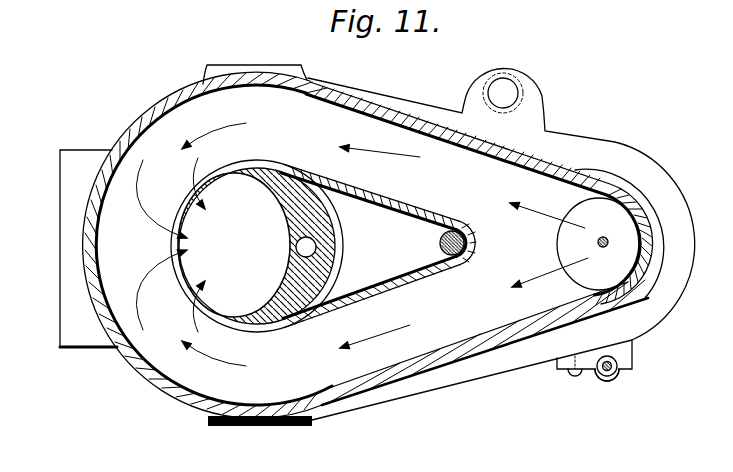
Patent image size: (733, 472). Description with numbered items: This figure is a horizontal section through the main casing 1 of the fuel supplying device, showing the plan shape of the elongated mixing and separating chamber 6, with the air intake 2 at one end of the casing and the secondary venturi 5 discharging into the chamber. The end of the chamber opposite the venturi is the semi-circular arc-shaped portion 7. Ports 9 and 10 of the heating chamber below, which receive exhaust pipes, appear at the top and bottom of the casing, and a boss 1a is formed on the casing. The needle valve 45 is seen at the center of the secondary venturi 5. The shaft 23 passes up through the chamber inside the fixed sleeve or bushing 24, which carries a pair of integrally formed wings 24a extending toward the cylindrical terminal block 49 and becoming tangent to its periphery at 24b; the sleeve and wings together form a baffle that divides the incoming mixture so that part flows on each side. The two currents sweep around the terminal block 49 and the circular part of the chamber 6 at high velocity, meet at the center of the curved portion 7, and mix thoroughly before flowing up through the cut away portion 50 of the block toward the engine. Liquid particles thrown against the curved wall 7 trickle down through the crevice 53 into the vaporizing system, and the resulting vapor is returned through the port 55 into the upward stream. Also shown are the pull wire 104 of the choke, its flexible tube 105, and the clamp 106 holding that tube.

The main casing 1 is at (388, 110).
The mounting boss 1a is at (533, 94).
The air intake 2 is at (58, 238).
The secondary venturi 5 is at (557, 252).
The mixing and separating chamber 6 is at (362, 245).
The arc-shaped portion of the chamber 7 is at (97, 258).
The port of the heating chamber 9 is at (260, 428).
The port of the heating chamber 10 is at (247, 64).
The shaft 23 is at (455, 228).
The fixed sleeve or bushing 24 is at (473, 236).
The wings 24a is at (362, 292).
The tangent portion of the wings 24b is at (301, 174).
The needle valve 45 is at (602, 237).
The cylindrical terminal block 49 is at (340, 236).
The cut away portion of the terminal block 50 is at (285, 207).
The crevice or arc-shaped groove 53 is at (177, 277).
The port 55 is at (296, 246).
The pull wire 104 is at (590, 373).
The flexible tube 105 is at (606, 378).
The clamp 106 is at (620, 377).